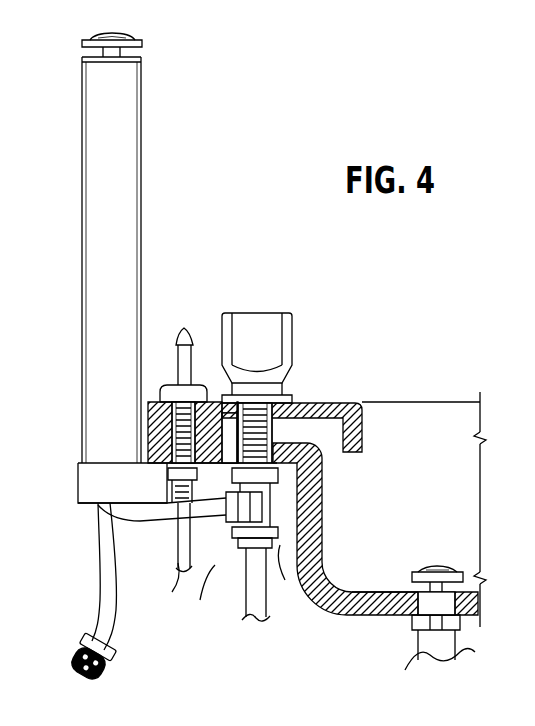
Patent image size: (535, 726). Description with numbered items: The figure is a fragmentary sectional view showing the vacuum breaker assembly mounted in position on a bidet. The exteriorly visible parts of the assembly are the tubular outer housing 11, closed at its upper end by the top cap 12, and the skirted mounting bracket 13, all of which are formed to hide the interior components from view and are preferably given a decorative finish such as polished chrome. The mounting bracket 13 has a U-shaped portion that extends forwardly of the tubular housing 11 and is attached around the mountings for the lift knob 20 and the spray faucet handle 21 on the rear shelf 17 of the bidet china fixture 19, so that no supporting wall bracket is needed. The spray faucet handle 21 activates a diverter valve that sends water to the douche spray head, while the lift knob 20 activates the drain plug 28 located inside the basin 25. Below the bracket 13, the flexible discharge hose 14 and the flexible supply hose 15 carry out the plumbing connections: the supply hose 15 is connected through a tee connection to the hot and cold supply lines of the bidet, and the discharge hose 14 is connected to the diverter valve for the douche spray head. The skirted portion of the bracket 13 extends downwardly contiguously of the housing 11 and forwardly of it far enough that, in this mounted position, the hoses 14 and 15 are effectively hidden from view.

The tubular outer housing 11 is at (134, 136).
The top cap 12 is at (137, 44).
The skirted mounting bracket 13 is at (82, 481).
The flexible discharge hose 14 is at (153, 521).
The flexible supply hose 15 is at (107, 600).
The rear shelf 17 is at (340, 401).
The bidet china fixture 19 is at (362, 616).
The lift knob 20 is at (184, 328).
The spray faucet handle 21 is at (276, 330).
The basin 25 is at (378, 591).
The drain plug 28 is at (435, 565).